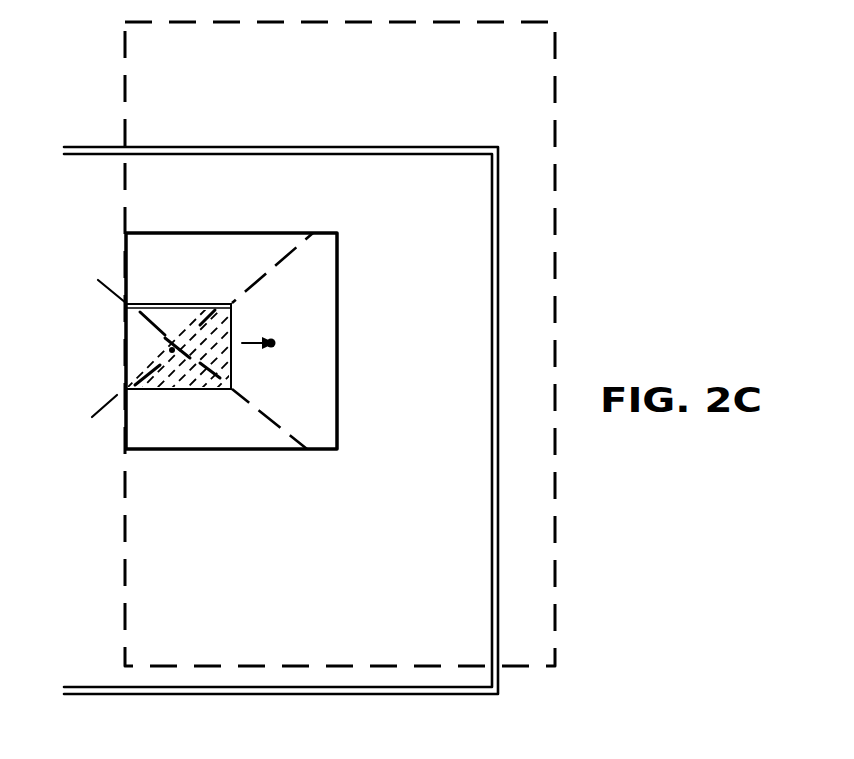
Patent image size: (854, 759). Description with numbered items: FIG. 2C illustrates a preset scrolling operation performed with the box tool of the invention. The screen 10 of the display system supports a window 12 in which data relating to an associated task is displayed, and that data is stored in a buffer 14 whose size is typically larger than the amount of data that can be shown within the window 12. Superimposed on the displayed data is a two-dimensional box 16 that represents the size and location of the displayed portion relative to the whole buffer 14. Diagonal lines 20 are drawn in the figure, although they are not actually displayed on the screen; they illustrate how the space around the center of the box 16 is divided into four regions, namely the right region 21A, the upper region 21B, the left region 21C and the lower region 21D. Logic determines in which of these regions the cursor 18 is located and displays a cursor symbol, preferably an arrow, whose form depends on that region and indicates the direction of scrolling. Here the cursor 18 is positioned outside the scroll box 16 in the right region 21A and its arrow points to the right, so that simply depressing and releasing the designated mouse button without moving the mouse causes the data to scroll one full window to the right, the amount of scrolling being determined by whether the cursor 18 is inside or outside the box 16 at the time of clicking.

The screen 10 is at (302, 146).
The window 12 is at (233, 232).
The buffer 14 is at (556, 80).
The box 16 is at (165, 392).
The cursor 18 is at (272, 348).
The diagonal lines 20 is at (109, 289).
The right region 21A is at (237, 313).
The upper region 21B is at (172, 300).
The left region 21C is at (124, 340).
The lower region 21D is at (203, 390).